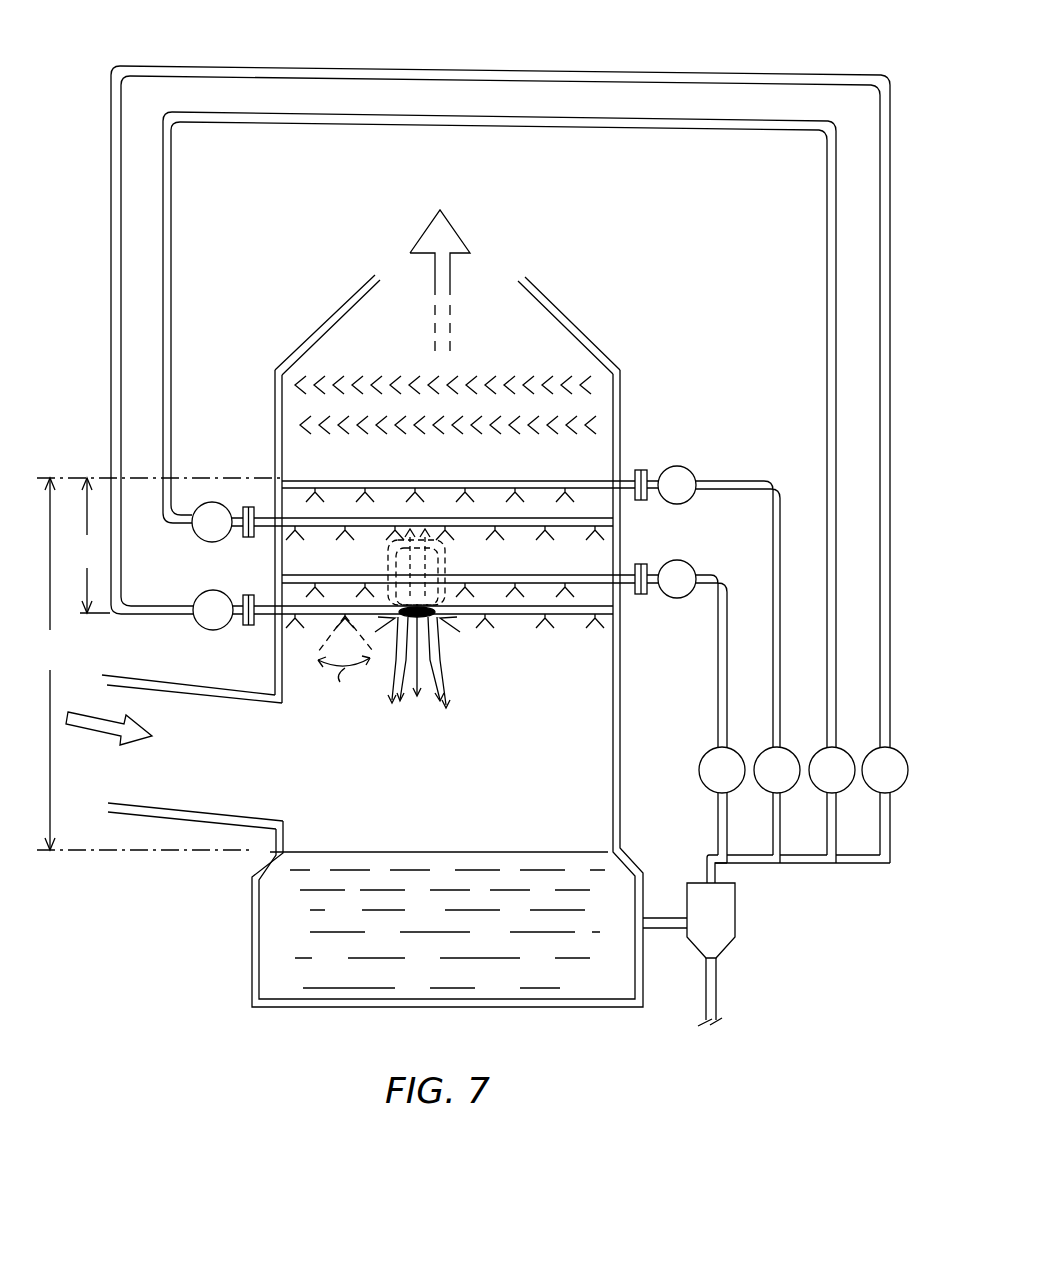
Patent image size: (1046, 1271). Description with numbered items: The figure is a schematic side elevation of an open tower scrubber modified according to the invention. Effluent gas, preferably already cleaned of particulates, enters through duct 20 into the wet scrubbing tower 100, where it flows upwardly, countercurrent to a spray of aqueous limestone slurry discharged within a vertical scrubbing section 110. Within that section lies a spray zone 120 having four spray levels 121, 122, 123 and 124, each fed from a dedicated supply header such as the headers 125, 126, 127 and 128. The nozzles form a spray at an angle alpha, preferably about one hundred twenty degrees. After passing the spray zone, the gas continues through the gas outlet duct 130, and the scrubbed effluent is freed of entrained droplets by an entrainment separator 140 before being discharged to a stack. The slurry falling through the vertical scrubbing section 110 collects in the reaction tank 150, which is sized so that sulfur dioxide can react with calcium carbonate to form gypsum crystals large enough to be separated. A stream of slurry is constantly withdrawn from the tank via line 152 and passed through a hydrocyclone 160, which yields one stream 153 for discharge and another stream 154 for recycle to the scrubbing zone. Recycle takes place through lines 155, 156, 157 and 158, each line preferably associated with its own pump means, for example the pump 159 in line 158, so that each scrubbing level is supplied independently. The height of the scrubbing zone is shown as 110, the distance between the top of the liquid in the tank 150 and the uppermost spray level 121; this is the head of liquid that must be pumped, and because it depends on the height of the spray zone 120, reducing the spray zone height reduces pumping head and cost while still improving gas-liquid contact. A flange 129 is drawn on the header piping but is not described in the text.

The duct 20 is at (221, 774).
The wet scrubbing tower 100 is at (603, 334).
The vertical scrubbing section 110 is at (158, 664).
The spray zone 120 is at (87, 545).
The first spray level 121 is at (422, 480).
The second spray level 122 is at (366, 528).
The third spray level 123 is at (508, 576).
The fourth spray level 124 is at (560, 627).
The supply header 125 is at (213, 603).
The supply header 126 is at (218, 513).
The supply header 127 is at (692, 479).
The supply header 128 is at (683, 575).
The flange 129 is at (641, 478).
The gas outlet duct 130 is at (483, 305).
The entrainment separator 140 is at (378, 376).
The reaction tank 150 is at (487, 985).
The line 152 is at (670, 930).
The discharge stream 153 is at (720, 988).
The recycle stream 154 is at (720, 872).
The recycle line 155 is at (718, 581).
The recycle line 156 is at (746, 487).
The recycle line 157 is at (753, 133).
The recycle line 158 is at (748, 73).
The pump means 159 is at (868, 753).
The hydrocyclone 160 is at (725, 917).